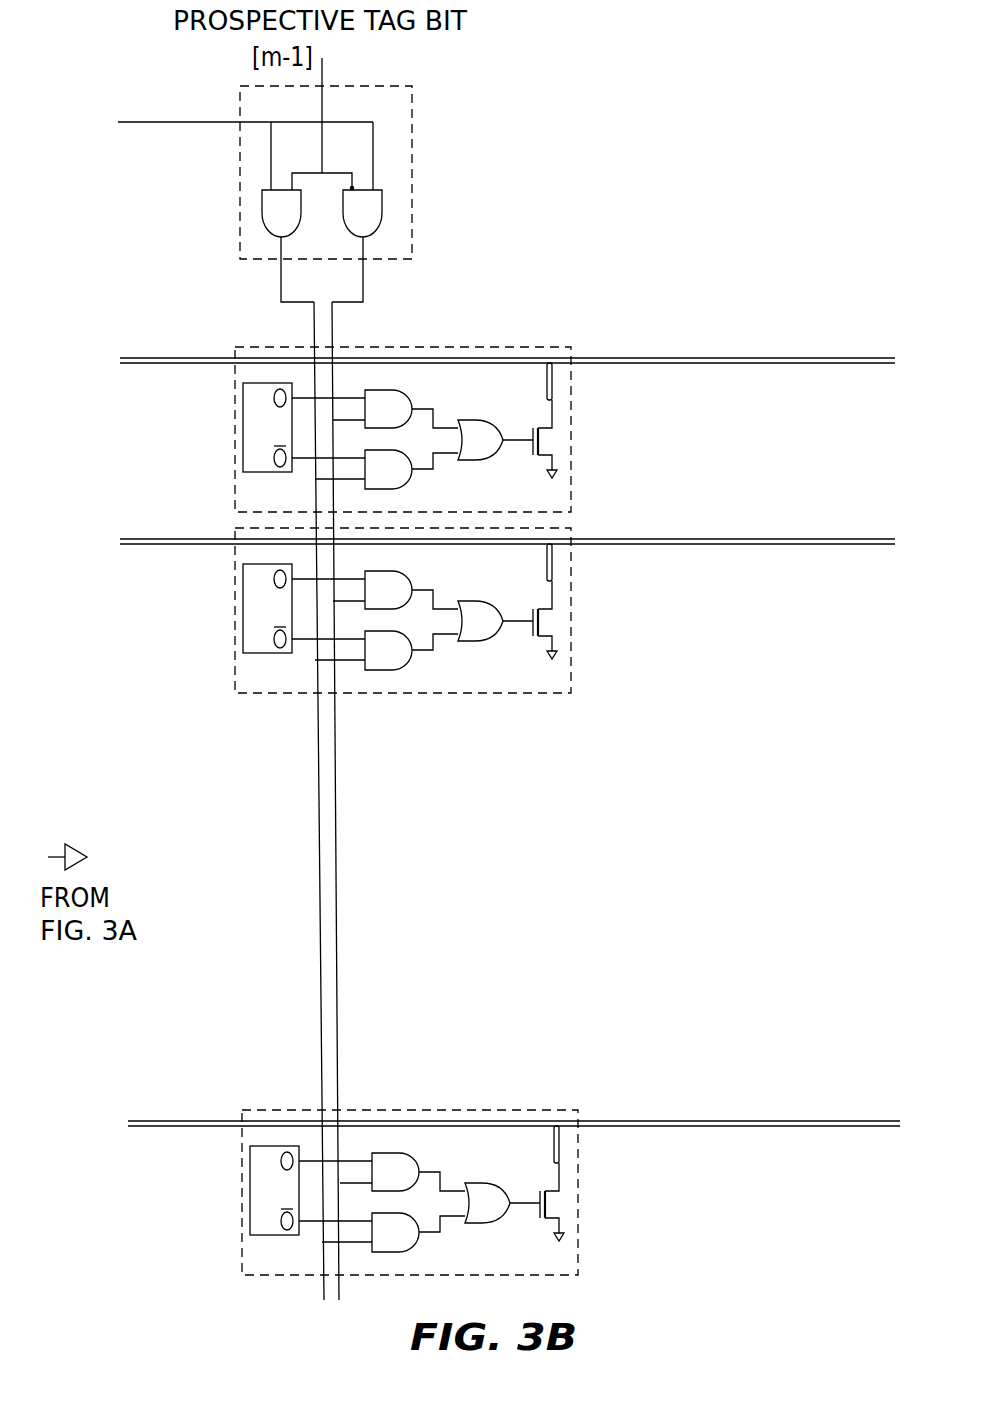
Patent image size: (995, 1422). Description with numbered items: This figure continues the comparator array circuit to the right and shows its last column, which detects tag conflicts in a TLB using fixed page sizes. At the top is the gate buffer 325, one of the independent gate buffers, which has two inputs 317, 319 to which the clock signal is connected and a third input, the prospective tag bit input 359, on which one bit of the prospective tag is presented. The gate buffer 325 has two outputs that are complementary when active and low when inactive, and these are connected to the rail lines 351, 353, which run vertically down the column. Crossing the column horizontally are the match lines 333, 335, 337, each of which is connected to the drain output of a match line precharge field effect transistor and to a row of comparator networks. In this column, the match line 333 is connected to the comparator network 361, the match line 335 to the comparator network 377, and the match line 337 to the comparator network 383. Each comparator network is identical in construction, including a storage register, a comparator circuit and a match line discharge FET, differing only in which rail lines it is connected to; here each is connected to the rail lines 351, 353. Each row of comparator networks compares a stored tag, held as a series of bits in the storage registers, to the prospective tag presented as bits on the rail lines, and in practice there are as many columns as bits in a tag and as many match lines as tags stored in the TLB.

The input of gate buffer 317 is at (262, 165).
The input of gate buffer 319 is at (386, 146).
The gate buffer 325 is at (317, 194).
The prospective tag bit input 359 is at (330, 72).
The match line 333 is at (150, 356).
The match line 335 is at (143, 537).
The match line 337 is at (605, 1121).
The rail line 351 is at (319, 808).
The rail line 353 is at (337, 793).
The comparator network 361 is at (588, 437).
The comparator network 377 is at (588, 609).
The comparator network 383 is at (613, 1183).